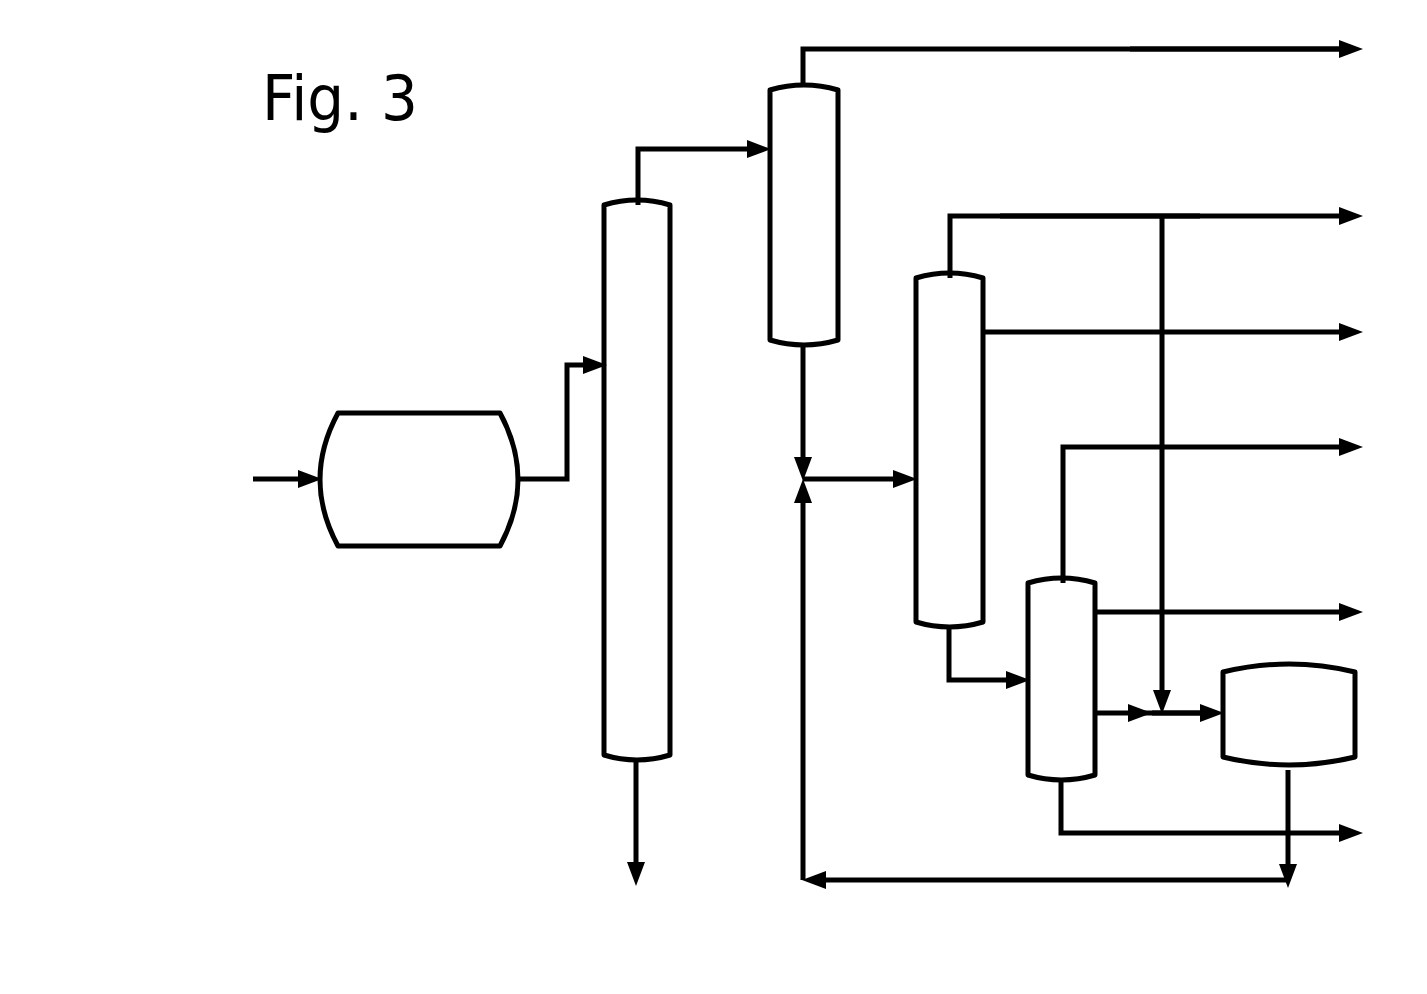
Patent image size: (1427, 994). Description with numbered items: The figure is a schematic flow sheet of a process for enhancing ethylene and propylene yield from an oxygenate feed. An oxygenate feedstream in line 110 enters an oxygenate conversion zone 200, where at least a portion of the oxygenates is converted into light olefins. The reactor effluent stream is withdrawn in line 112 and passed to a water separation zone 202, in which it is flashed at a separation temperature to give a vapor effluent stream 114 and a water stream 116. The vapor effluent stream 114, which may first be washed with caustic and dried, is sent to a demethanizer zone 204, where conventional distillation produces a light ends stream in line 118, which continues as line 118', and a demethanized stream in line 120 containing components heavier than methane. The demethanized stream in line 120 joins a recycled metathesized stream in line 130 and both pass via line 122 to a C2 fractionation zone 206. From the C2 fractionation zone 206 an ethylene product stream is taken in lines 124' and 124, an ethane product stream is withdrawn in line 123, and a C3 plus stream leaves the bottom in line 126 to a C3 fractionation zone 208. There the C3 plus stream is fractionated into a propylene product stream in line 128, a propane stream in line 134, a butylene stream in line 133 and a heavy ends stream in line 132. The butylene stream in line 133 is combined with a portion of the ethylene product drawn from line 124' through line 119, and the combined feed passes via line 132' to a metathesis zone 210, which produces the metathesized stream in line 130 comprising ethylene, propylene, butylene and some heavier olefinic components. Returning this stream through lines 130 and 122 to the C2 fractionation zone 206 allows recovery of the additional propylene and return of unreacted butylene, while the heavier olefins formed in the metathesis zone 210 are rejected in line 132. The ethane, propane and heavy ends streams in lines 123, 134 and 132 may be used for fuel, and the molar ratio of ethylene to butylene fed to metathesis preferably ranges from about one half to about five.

The oxygenate feedstream line 110 is at (273, 476).
The reactor effluent stream line 112 is at (565, 480).
The vapor effluent stream 114 is at (636, 149).
The water stream 116 is at (638, 848).
The light ends stream line 118 is at (1083, 67).
The light ends stream line 118' is at (1235, 81).
The ethylene portion line 119 is at (1160, 416).
The demethanized stream line 120 is at (800, 378).
The C2 fractionation feed line 122 is at (858, 492).
The ethane product stream line 123 is at (1215, 330).
The ethylene product stream line 124 is at (1156, 216).
The ethylene product stream line 124' is at (1100, 237).
The C3 plus stream line 126 is at (988, 683).
The propylene product stream line 128 is at (1232, 445).
The metathesized stream line 130 is at (940, 878).
The heavy ends stream line 132 is at (1158, 812).
The metathesis zone feed line 132' is at (1184, 752).
The butylene stream line 133 is at (1126, 716).
The propane stream line 134 is at (1230, 610).
The oxygenate conversion zone 200 is at (442, 491).
The water separation zone 202 is at (604, 243).
The demethanizer zone 204 is at (838, 192).
The C2 fractionation zone 206 is at (983, 307).
The C3 fractionation zone 208 is at (1096, 593).
The metathesis zone 210 is at (1309, 724).